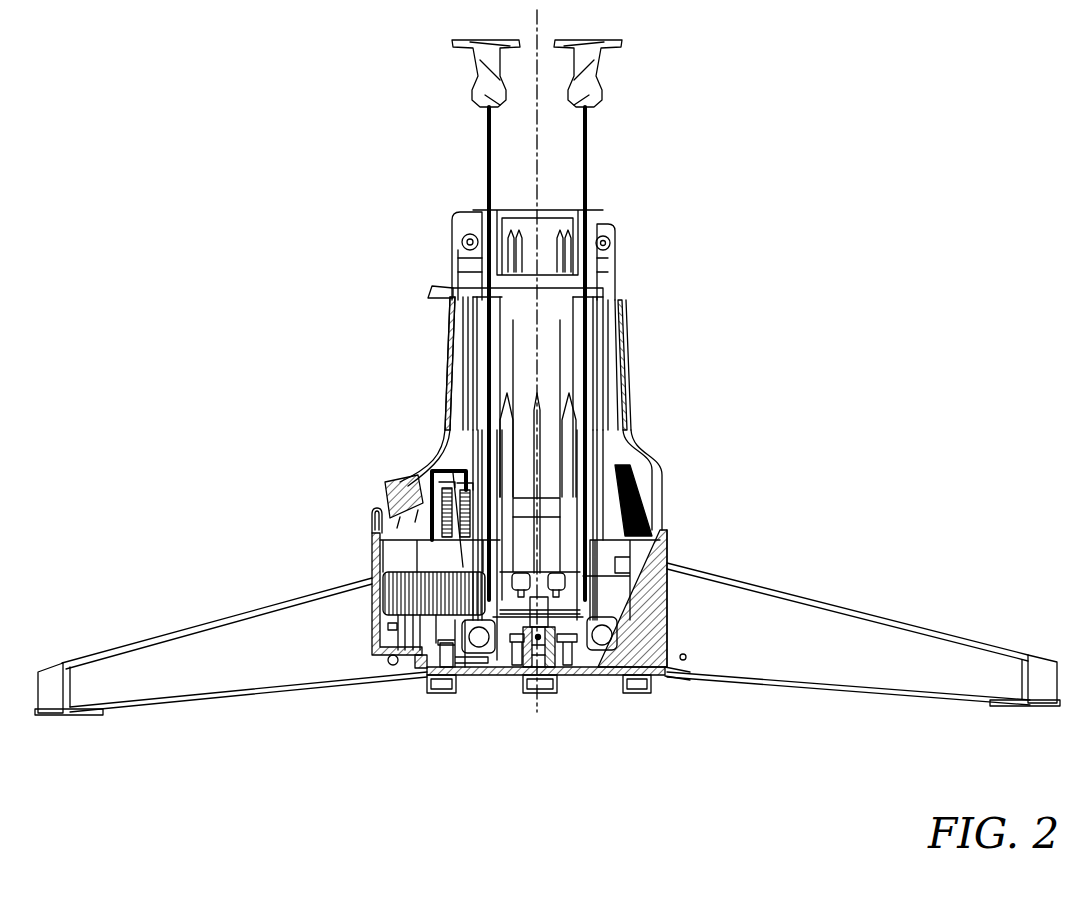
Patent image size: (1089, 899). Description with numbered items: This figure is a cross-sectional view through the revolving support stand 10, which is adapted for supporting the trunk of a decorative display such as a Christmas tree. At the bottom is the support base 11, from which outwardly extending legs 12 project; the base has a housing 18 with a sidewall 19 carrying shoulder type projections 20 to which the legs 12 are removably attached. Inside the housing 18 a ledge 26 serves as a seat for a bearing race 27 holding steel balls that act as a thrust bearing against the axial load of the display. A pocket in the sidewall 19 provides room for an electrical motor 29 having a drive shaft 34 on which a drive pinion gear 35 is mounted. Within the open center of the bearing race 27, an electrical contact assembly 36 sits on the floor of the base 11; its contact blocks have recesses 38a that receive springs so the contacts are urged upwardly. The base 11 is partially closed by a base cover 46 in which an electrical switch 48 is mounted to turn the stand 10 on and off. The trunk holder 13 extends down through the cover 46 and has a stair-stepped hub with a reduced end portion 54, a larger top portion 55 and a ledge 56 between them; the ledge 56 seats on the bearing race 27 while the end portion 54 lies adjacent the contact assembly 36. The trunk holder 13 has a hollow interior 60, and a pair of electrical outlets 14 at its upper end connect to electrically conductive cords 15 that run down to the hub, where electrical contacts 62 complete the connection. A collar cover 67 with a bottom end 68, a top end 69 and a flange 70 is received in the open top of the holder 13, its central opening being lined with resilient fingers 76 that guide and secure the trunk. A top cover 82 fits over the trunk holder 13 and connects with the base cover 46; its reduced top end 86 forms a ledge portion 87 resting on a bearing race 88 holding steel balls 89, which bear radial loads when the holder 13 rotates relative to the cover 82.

The revolving support stand 10 is at (547, 411).
The support base 11 is at (497, 672).
The legs 12 is at (263, 607).
The trunk holder 13 is at (607, 338).
The electrical outlets 14 is at (473, 73).
The electrically conductive cords 15 is at (482, 137).
The housing 18 is at (667, 552).
The sidewall 19 is at (370, 557).
The shoulder type projections 20 is at (680, 673).
The ledge 26 is at (612, 716).
The bearing race 27 is at (663, 638).
The electrical motor 29 is at (378, 603).
The drive shaft 34 is at (447, 430).
The drive pinion gear 35 is at (420, 473).
The electrical contact assembly 36 is at (523, 670).
The recesses 38a is at (560, 670).
The base cover 46 is at (376, 507).
The electrical switch 48 is at (381, 500).
The end portion 54 is at (497, 667).
The top portion 55 is at (585, 568).
The ledge 56 is at (593, 673).
The hollow interior 60 is at (575, 545).
The electrical contacts 62 is at (537, 573).
The collar cover 67 is at (613, 262).
The bottom end 68 is at (613, 278).
The top end 69 is at (483, 212).
The flange 70 is at (467, 257).
The resilient fingers 76 is at (545, 227).
The top cover 82 is at (430, 290).
The top end 86 is at (607, 225).
The ledge portion 87 is at (610, 232).
The bearing race 88 is at (467, 233).
The steel balls 89 is at (610, 257).